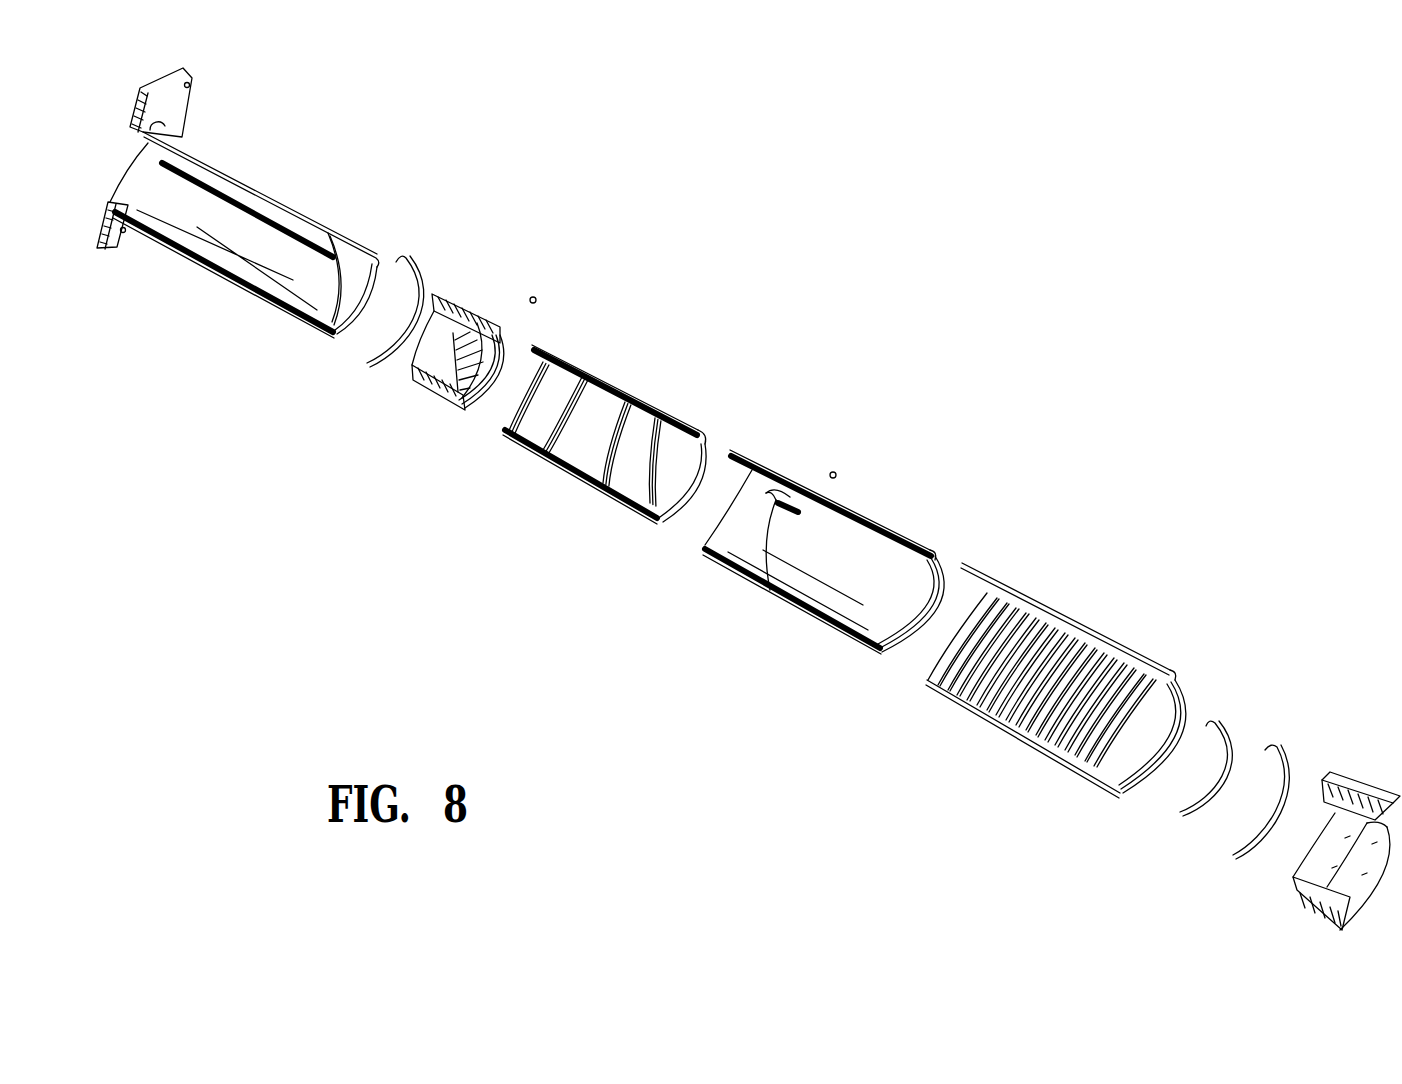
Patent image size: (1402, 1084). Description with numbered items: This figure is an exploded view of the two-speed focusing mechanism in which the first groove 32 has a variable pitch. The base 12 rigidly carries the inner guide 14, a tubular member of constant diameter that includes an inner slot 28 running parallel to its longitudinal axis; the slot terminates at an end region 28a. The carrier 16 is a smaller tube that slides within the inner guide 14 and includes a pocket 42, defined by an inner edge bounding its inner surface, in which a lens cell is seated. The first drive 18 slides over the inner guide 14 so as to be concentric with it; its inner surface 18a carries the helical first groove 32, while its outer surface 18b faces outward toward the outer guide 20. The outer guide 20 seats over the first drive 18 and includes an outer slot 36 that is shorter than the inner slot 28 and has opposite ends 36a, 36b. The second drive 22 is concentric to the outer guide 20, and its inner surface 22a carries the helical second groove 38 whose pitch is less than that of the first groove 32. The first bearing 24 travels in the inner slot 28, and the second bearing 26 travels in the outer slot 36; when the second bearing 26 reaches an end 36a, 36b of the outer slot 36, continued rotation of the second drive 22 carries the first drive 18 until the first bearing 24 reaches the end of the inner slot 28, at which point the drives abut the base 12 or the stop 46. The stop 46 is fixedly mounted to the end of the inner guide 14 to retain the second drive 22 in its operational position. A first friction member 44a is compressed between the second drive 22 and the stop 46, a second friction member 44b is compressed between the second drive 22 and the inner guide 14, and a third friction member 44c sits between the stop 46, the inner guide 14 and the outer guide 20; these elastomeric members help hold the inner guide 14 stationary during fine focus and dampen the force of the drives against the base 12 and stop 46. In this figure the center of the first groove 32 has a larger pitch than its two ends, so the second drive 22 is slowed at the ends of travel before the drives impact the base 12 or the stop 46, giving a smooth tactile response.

The base 12 is at (123, 258).
The inner guide 14 is at (287, 200).
The carrier 16 is at (420, 392).
The first drive 18 is at (555, 528).
The inner surface 18a is at (557, 445).
The outer surface 18b is at (653, 393).
The outer guide 20 is at (832, 642).
The second drive 22 is at (997, 754).
The inner surface 22a is at (1177, 697).
The first bearing 24 is at (533, 297).
The second bearing 26 is at (833, 472).
The inner slot 28 is at (150, 152).
The lip end 28a is at (330, 323).
The first groove 32 is at (660, 522).
The outer slot 36 is at (770, 590).
The end of the outer slot 36a is at (800, 513).
The end of the outer slot 36b is at (772, 493).
The second groove 38 is at (1093, 747).
The pocket 42 is at (460, 327).
The first friction member 44a is at (1287, 753).
The second friction member 44b is at (418, 258).
The third friction member 44c is at (1227, 727).
The stop 46 is at (1377, 780).